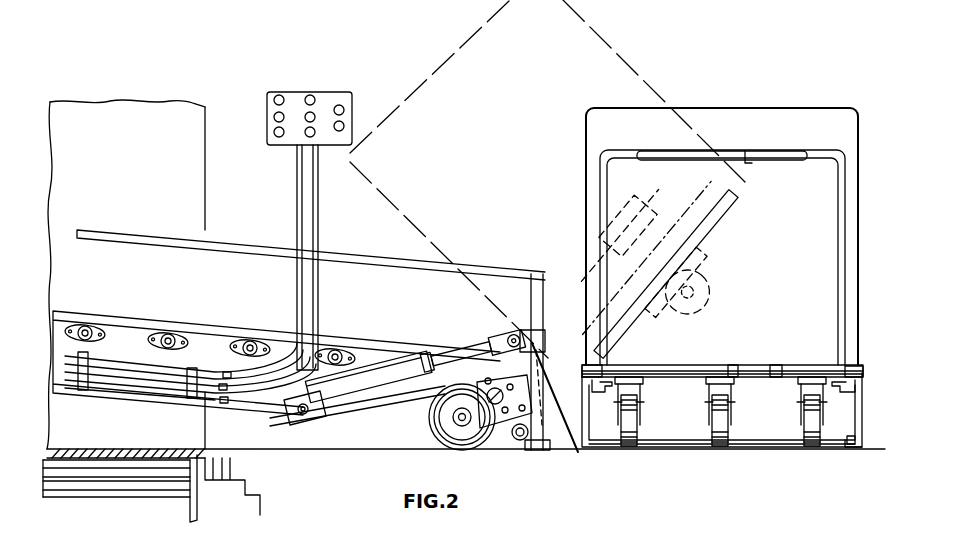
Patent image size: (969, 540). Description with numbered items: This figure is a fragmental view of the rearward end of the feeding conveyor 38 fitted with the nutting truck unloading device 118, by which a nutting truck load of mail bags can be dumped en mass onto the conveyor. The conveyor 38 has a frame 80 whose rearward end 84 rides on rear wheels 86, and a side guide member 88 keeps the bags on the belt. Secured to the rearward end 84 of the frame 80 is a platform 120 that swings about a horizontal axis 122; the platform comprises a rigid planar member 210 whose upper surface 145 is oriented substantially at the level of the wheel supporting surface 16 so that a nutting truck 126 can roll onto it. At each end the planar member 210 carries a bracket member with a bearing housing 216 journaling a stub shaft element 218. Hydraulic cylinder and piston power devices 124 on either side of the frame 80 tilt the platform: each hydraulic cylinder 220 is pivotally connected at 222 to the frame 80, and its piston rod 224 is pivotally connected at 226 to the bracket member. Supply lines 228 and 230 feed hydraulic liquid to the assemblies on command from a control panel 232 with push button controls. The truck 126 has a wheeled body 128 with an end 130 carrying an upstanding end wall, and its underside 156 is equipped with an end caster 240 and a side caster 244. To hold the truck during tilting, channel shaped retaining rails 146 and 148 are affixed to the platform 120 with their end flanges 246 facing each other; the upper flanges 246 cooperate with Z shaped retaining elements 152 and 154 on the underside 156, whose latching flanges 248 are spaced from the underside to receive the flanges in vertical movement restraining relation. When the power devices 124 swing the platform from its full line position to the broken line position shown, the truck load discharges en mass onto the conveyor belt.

The wheel supporting surface 16 is at (342, 452).
The feeding conveyor 38 is at (163, 218).
The frame 80 is at (110, 236).
The rearward end 84 is at (503, 430).
The rear wheels 86 is at (445, 415).
The side guide member 88 is at (240, 242).
The nutting truck unloading device 118 is at (382, 73).
The platform 120 is at (597, 460).
The horizontal axis 122 is at (527, 458).
The hydraulic cylinder and piston power device 124 is at (418, 375).
The nutting truck 126 is at (833, 90).
The nutting truck body 128 is at (856, 373).
The end 130 is at (843, 376).
The upper surface 145 is at (766, 455).
The retaining rail 146 is at (858, 428).
The retaining rail 148 is at (608, 398).
The retaining element 152 is at (843, 395).
The retaining element 154 is at (615, 365).
The underside 156 is at (775, 380).
The planar member 210 is at (700, 455).
The bearing housing 216 is at (508, 440).
The stub shaft element 218 is at (452, 452).
The hydraulic cylinder 220 is at (380, 387).
The pivotal connection 222 is at (302, 432).
The piston rod 224 is at (507, 330).
The pivotal connection 226 is at (530, 335).
The supply line 228 is at (240, 403).
The supply line 230 is at (270, 410).
The control panel 232 is at (292, 99).
The end caster 240 is at (735, 363).
The side caster 244 is at (818, 363).
The end flange 246 is at (866, 373).
The latching flange 248 is at (853, 389).